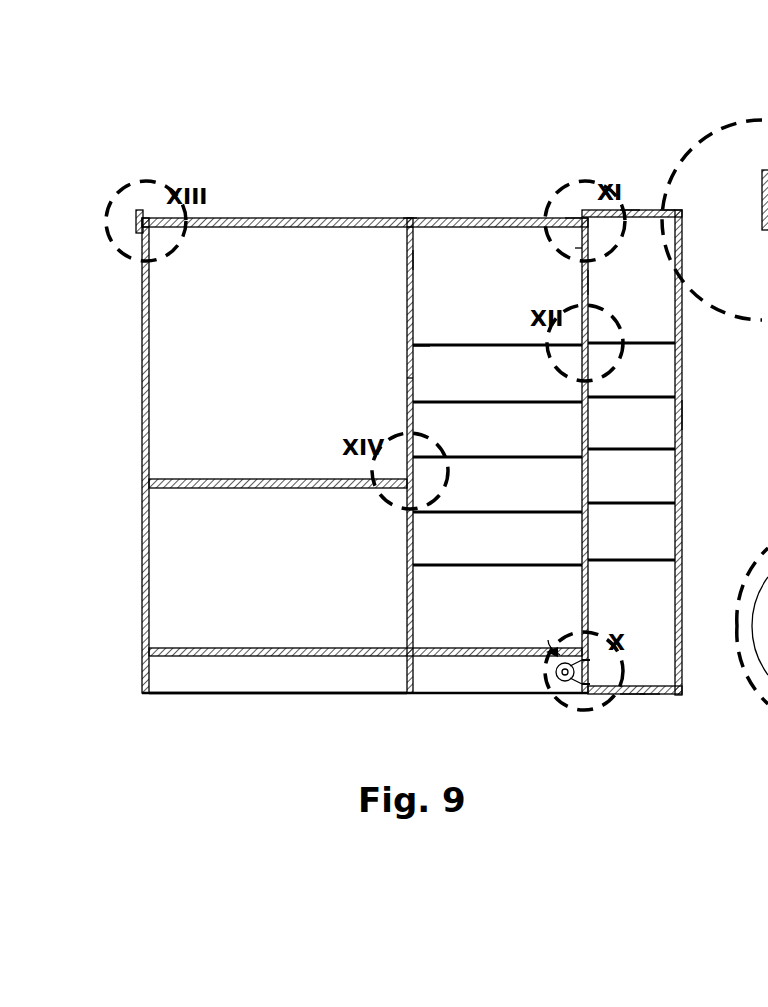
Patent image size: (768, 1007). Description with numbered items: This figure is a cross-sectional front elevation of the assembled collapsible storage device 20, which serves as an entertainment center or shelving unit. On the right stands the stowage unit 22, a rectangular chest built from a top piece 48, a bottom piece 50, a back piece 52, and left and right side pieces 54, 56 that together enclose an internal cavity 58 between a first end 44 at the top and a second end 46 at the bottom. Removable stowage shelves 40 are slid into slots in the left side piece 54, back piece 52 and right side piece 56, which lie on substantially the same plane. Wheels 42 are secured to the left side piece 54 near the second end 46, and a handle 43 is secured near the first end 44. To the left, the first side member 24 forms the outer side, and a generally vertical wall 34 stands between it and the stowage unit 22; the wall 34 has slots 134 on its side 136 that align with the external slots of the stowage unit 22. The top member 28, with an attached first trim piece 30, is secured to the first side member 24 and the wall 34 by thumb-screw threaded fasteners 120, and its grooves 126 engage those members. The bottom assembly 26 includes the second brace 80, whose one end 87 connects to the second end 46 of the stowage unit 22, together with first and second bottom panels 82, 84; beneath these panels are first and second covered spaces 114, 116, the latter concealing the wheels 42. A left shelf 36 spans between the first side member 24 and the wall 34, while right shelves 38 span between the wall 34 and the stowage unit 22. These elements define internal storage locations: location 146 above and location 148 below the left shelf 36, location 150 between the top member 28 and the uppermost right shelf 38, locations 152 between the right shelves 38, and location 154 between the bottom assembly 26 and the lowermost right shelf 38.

The collapsible storage device 20 is at (385, 156).
The stowage unit 22 is at (692, 374).
The first side member 24 is at (150, 393).
The bottom assembly 26 is at (331, 700).
The top member 28 is at (467, 218).
The first trim piece 30 is at (137, 216).
The wall 34 is at (407, 548).
The left shelf 36 is at (249, 479).
The right shelves 38 is at (524, 354).
The stowage shelves 40 is at (656, 350).
The wheels 42 is at (562, 660).
The handle 43 is at (574, 248).
The first end 44 is at (660, 210).
The second end 46 is at (648, 694).
The top piece 48 is at (628, 210).
The bottom piece 50 is at (632, 694).
The back piece 52 is at (660, 266).
The left side piece 54 is at (588, 280).
The right side piece 56 is at (683, 418).
The internal cavity 58 is at (690, 592).
The second brace 80 is at (272, 678).
The first bottom panel 82 is at (293, 648).
The second bottom panel 84 is at (507, 648).
The one end of second brace 87 is at (560, 655).
The first covered space 114 is at (370, 675).
The second covered space 116 is at (457, 676).
The threaded fasteners 120 is at (410, 218).
The grooves 126 is at (150, 226).
The slots 134 is at (414, 347).
The side 136 is at (415, 262).
The internal storage location 146 is at (281, 338).
The internal storage location 148 is at (230, 573).
The internal storage location 150 is at (495, 298).
The internal storage locations 152 is at (413, 376).
The internal storage location 154 is at (521, 605).